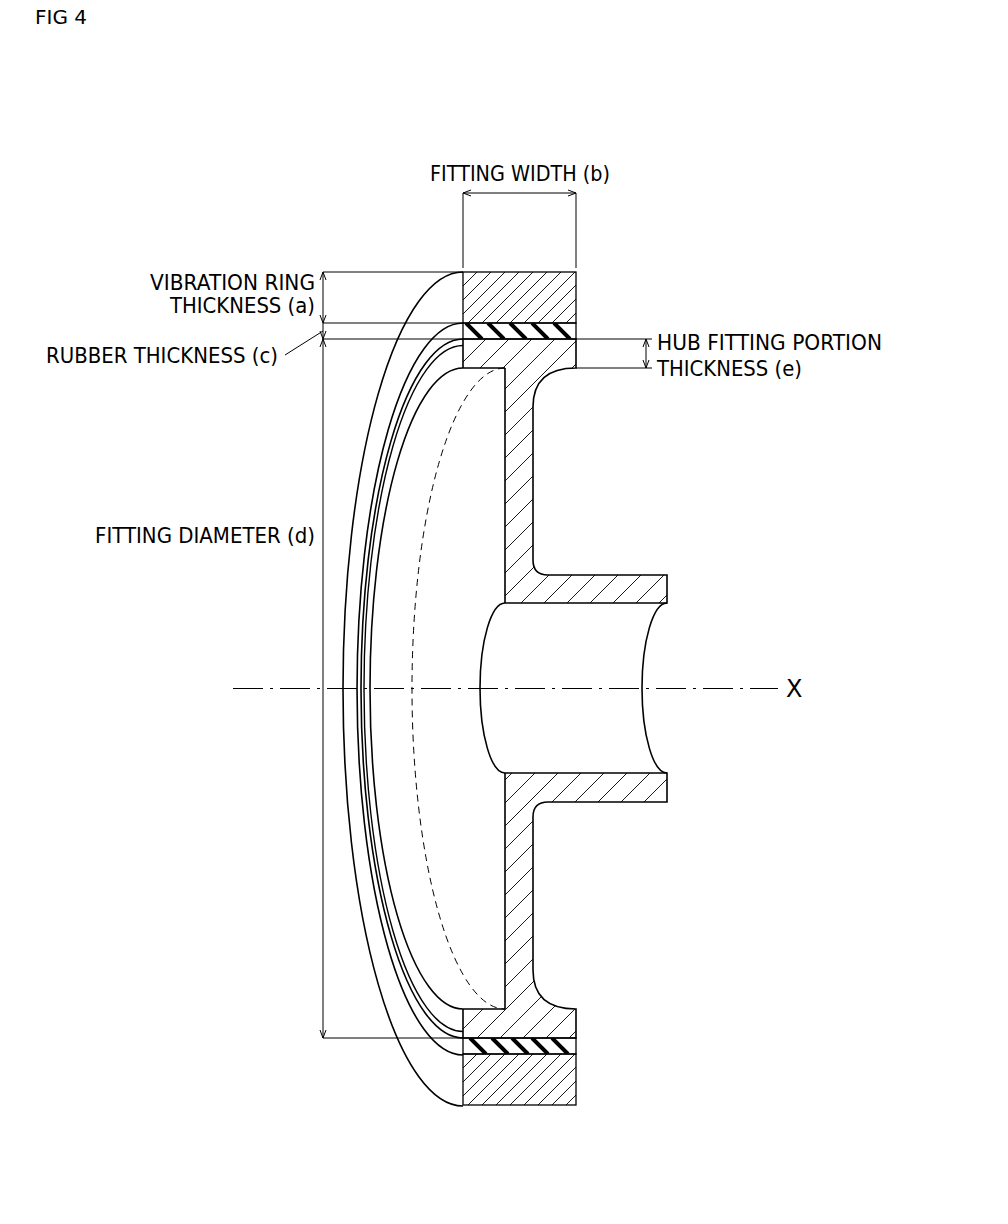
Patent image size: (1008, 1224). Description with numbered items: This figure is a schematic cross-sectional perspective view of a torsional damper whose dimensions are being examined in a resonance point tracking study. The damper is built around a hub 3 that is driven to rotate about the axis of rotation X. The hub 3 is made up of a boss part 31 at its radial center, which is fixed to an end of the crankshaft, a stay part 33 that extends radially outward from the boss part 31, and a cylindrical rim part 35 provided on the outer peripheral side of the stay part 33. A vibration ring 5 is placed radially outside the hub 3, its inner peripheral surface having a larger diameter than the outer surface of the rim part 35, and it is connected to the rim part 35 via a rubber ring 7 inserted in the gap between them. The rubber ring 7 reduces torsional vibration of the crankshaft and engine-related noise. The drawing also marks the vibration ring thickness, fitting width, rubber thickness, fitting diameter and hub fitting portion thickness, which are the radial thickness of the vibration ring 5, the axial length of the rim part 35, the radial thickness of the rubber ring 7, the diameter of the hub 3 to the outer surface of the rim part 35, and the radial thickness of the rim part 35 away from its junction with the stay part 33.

The hub 3 is at (528, 679).
The vibration ring 5 is at (576, 290).
The rubber ring 7 is at (576, 327).
The boss part 31 is at (573, 669).
The stay part 33 is at (533, 462).
The rim part 35 is at (576, 358).